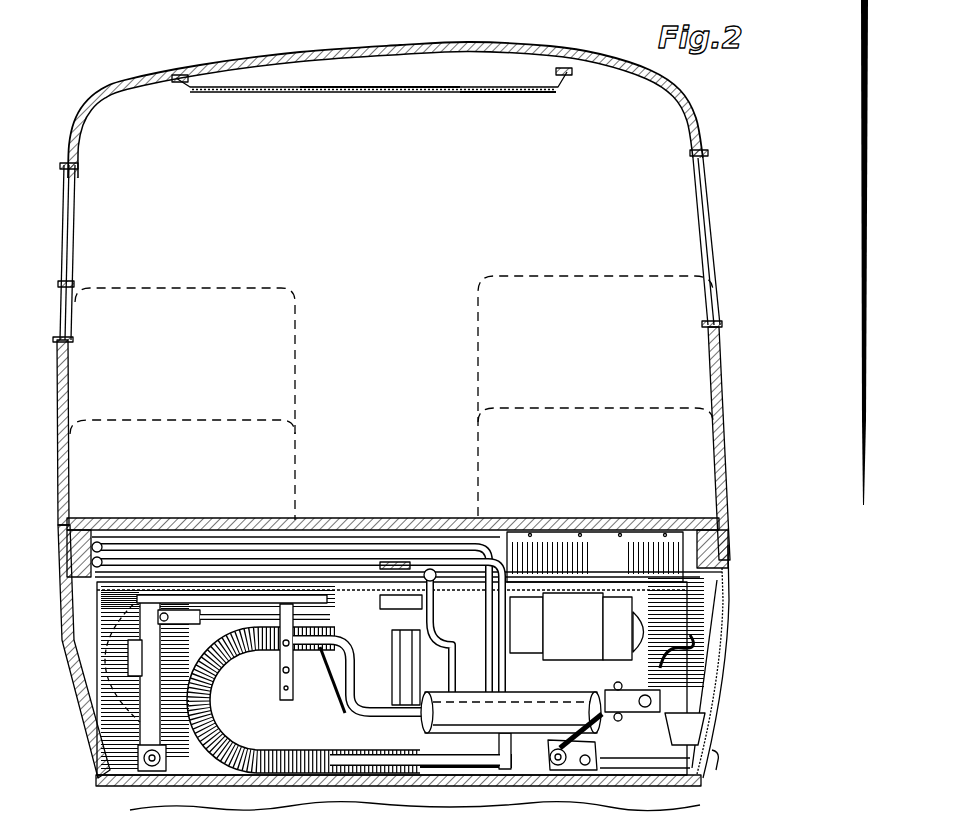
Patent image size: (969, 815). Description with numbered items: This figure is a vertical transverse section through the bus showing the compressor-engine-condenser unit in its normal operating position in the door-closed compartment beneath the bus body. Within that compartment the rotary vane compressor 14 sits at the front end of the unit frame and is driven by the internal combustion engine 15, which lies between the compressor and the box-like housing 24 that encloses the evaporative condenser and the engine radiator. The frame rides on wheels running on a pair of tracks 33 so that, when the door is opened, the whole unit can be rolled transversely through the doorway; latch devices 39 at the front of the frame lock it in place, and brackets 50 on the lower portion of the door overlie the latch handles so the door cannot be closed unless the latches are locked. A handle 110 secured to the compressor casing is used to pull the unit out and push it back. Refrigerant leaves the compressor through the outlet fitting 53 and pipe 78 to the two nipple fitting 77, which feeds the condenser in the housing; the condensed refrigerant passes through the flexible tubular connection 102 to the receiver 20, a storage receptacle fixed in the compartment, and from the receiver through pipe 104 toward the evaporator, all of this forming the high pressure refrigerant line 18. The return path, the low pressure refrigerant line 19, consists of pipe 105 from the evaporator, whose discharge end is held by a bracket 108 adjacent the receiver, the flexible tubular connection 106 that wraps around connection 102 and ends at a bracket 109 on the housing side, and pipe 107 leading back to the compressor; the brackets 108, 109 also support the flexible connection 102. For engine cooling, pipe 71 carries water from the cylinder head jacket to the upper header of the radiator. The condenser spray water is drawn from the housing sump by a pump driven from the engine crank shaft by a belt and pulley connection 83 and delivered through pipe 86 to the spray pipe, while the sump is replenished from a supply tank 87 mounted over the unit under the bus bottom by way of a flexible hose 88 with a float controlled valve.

The compressor 14 is at (640, 665).
The internal combustion engine 15 is at (556, 626).
The high pressure refrigerant line 18 is at (178, 562).
The low pressure refrigerant line 19 is at (155, 546).
The receiver 20 is at (528, 770).
The box-like housing 24 is at (96, 706).
The tracks 33 is at (545, 768).
The latch devices 39 is at (600, 780).
The brackets 50 is at (692, 720).
The refrigerant outlet fitting 53 is at (640, 696).
The pipe 71 is at (412, 595).
The two nipple fitting 77 is at (300, 652).
The pipe 78 is at (333, 680).
The belt and pulley connection 83 is at (406, 664).
The pipe 86 is at (244, 626).
The supply tank 87 is at (595, 557).
The flexible hose 88 is at (441, 648).
The flexible tubular connection 102 is at (215, 697).
The pipe 104 is at (320, 579).
The pipe 105 is at (330, 542).
The flexible tubular connection 106 is at (205, 698).
The pipe 107 is at (338, 650).
The bracket 108 is at (363, 788).
The bracket 109 is at (270, 652).
The handle 110 is at (702, 650).